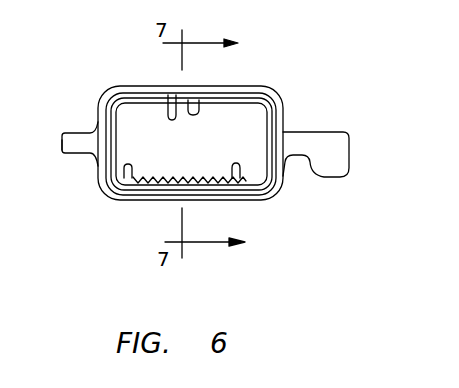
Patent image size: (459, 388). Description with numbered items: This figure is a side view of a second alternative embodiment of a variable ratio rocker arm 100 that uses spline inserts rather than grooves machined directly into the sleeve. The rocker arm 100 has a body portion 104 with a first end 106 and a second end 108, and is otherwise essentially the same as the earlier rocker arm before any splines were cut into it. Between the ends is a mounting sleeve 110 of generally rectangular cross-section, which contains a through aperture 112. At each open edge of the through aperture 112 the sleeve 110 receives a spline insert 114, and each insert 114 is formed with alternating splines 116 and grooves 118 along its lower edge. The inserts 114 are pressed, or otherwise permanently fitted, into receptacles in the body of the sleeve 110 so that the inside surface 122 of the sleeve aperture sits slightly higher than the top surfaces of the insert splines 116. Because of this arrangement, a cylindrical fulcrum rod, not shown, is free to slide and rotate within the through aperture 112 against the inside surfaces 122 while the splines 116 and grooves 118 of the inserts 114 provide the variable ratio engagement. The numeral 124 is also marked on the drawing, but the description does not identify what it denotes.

The rocker arm 100 is at (318, 48).
The body portion 104 is at (118, 86).
The first end 106 is at (72, 148).
The second end 108 is at (341, 147).
The mounting sleeve 110 is at (240, 98).
The through aperture 112 is at (234, 118).
The spline insert 114 is at (267, 99).
The splines 116 is at (188, 177).
The grooves 118 is at (217, 177).
The inside surface 122 is at (200, 100).
The contact loop 124 is at (170, 96).